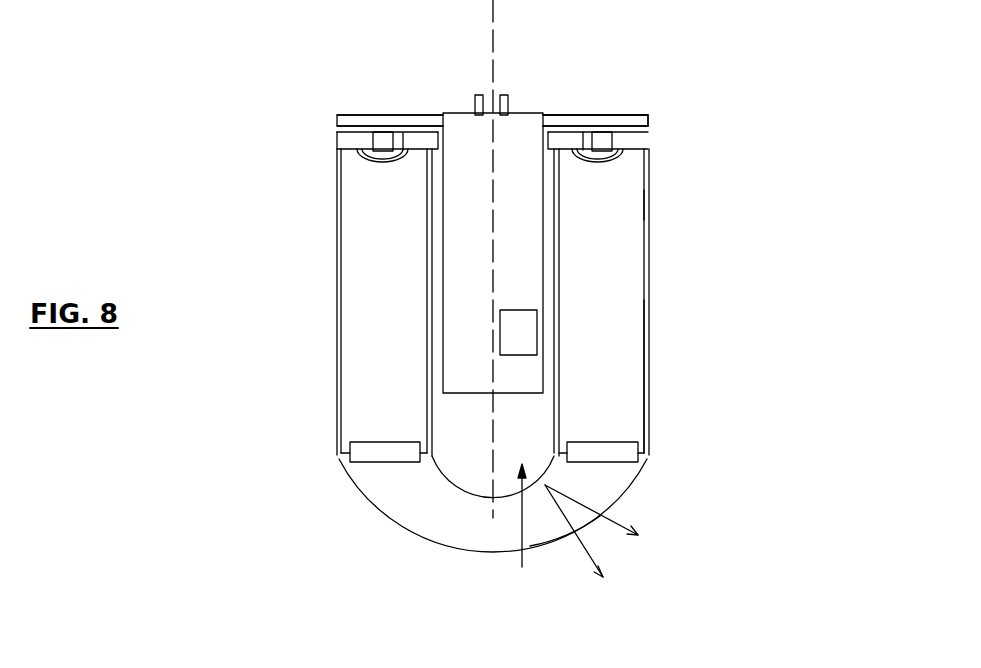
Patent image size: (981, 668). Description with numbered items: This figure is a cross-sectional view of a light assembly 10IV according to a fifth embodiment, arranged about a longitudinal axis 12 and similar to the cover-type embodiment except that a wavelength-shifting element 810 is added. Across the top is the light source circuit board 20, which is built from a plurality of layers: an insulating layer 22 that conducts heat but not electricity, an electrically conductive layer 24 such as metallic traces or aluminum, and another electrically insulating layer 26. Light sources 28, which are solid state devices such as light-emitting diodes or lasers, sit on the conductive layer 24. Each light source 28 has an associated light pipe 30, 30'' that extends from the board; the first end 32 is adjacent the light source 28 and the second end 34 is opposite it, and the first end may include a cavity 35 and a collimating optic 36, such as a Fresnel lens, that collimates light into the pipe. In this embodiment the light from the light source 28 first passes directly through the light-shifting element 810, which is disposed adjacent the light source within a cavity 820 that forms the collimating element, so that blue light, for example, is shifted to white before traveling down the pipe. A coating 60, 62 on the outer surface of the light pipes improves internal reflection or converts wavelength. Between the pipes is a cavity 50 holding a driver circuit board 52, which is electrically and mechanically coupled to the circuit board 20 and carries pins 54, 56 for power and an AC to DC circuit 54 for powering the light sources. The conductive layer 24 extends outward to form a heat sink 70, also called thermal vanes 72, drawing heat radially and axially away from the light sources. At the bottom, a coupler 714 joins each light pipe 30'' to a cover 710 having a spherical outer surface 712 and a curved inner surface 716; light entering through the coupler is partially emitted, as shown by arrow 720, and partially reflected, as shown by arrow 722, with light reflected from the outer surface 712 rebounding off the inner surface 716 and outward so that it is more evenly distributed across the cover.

The light assembly 10IV is at (706, 66).
The longitudinal axis 12 is at (495, 21).
The light source circuit board 20 is at (641, 119).
The insulating layer 22 is at (610, 119).
The conductive layer 24 is at (560, 128).
The insulating layer 26 is at (566, 150).
The light source 28 is at (383, 135).
The light pipe 30 is at (315, 302).
The light pipe 30'' is at (696, 301).
The first end 32 is at (352, 162).
The second end 34 is at (357, 427).
The cavity 35 is at (401, 133).
The collimating optic 36 is at (386, 165).
The cavity 50 is at (524, 529).
The driver circuit board 52 is at (458, 394).
The pin / AC to DC circuit 54 is at (478, 95).
The pin 56 is at (504, 95).
The coating 60 is at (342, 318).
The coating 62 is at (648, 410).
The heat sink 70 is at (662, 207).
The thermal vanes 72 is at (649, 242).
The cover 710 is at (555, 545).
The spherical outer surface 712 is at (450, 535).
The coupler 714 is at (352, 457).
The curved inner surface 716 is at (455, 483).
The arrow 720 is at (622, 514).
The arrow 722 is at (590, 503).
The wavelength-shifting element 810 is at (373, 162).
The cavity 820 is at (620, 149).